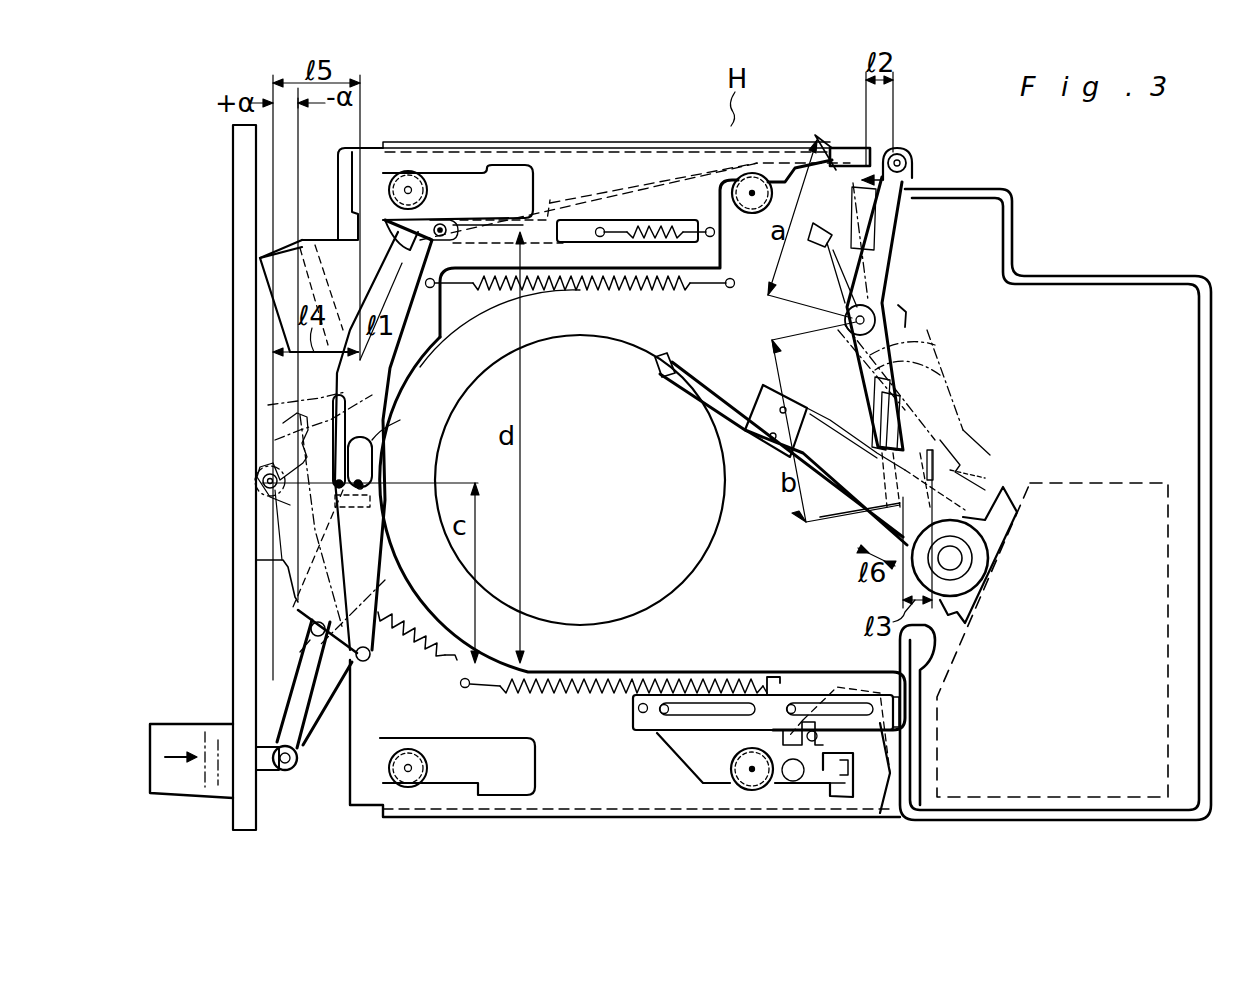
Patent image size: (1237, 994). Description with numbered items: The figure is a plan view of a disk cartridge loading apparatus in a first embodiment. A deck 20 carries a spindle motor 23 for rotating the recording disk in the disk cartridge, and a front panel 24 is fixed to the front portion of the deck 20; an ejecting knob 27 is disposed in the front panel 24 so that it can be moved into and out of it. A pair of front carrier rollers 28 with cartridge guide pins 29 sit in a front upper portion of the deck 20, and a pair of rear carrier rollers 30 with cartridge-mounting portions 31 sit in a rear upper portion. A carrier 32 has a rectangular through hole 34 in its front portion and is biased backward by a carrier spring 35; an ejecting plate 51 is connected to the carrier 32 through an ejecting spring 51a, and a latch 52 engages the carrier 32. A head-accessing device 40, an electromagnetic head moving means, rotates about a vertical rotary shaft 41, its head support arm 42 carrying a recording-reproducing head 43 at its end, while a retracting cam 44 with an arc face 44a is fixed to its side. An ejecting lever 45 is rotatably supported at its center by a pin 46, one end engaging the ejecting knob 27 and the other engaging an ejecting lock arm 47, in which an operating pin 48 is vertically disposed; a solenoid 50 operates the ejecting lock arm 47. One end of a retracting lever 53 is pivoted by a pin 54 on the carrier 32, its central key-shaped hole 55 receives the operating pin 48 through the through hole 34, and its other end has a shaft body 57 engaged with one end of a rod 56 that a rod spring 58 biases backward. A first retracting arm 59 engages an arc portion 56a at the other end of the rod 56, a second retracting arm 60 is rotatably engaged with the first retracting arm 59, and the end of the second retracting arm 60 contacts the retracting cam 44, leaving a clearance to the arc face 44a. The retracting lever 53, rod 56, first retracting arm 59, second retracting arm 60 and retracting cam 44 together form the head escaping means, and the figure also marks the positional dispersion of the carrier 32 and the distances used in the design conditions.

The deck 20 is at (600, 657).
The spindle motor 23 is at (716, 543).
The front panel 24 is at (232, 172).
The ejecting knob 27 is at (195, 722).
The front carrier rollers 28 is at (430, 182).
The cartridge guide pins 29 is at (408, 186).
The rear carrier rollers 30 is at (754, 172).
The cartridge-mounting portions 31 is at (735, 196).
The carrier 32 is at (618, 814).
The rectangular through hole 34 is at (372, 460).
The carrier spring 35 is at (600, 288).
The head-accessing device 40 is at (880, 524).
The rotary shaft 41 is at (962, 559).
The head support arm 42 is at (888, 302).
The recording-reproducing head 43 is at (832, 254).
The retracting cam 44 is at (954, 442).
The arc face 44a is at (960, 466).
The ejecting lever 45 is at (257, 560).
The pin 46 is at (312, 628).
The ejecting lock arm 47 is at (320, 395).
The operating pin 48 is at (259, 482).
The solenoid 50 is at (260, 262).
The ejecting plate 51 is at (808, 694).
The ejecting spring 51a is at (656, 687).
The latch 52 is at (854, 804).
The retracting lever 53 is at (398, 220).
The pin 54 is at (364, 662).
The hole 55 is at (384, 432).
The rod 56 is at (647, 162).
The arc portion 56a is at (910, 161).
The shaft body 57 is at (446, 228).
The rod spring 58 is at (638, 227).
The first retracting arm 59 is at (908, 200).
The second retracting arm 60 is at (904, 360).